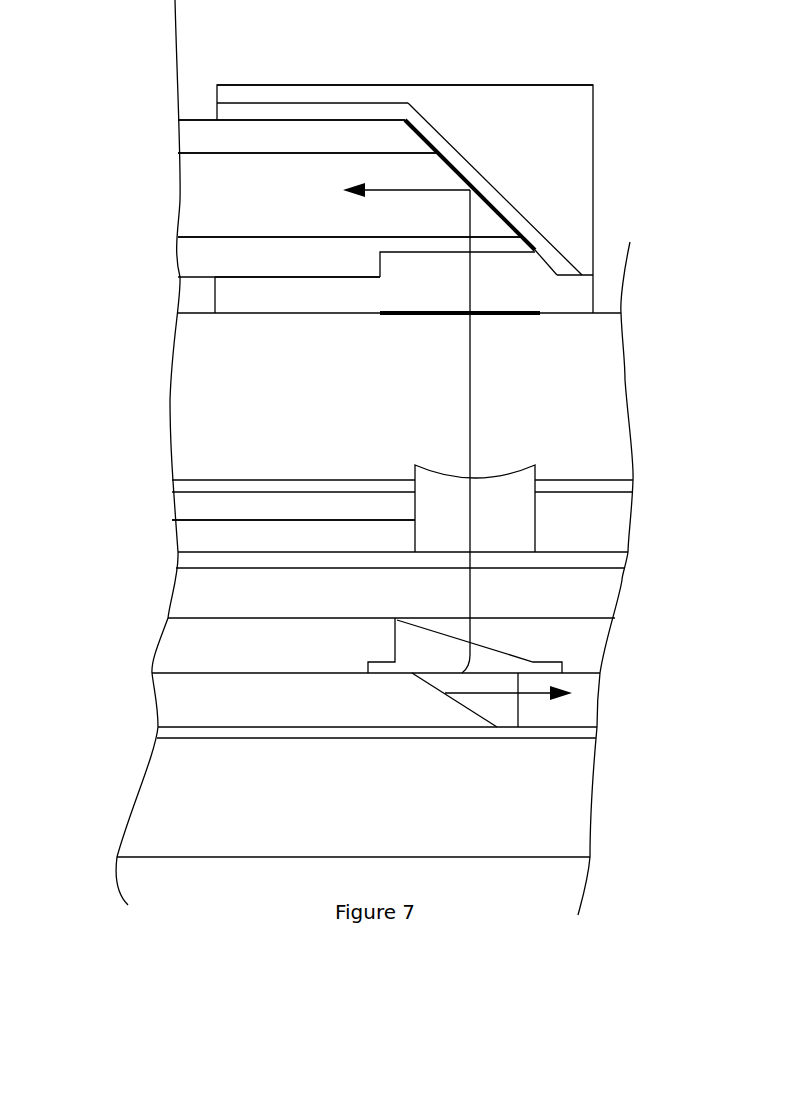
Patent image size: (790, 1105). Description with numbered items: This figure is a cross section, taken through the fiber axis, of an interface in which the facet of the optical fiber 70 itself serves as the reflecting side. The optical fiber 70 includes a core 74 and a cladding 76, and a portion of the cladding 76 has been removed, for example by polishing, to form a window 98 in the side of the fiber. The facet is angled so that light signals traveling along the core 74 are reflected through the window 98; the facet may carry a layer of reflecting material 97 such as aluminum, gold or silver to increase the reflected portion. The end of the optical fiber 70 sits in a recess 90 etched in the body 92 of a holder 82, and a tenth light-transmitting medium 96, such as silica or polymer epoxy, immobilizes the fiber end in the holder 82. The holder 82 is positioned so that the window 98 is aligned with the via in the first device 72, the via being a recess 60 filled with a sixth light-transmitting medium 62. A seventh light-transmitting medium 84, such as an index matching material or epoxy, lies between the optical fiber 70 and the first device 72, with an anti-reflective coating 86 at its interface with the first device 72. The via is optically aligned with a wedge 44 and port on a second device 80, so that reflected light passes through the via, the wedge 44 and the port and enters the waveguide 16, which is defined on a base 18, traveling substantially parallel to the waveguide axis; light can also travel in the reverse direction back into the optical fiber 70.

The optical fiber 70 is at (199, 72).
The holder 82 is at (620, 60).
The body 92 is at (468, 105).
The cladding 76 is at (178, 137).
The core 74 is at (207, 205).
The recess 90 is at (455, 148).
The tenth light-transmitting medium 96 is at (483, 183).
The reflecting material 97 is at (447, 165).
The window 98 is at (533, 258).
The anti-reflective coating 86 is at (387, 307).
The seventh light-transmitting medium 84 is at (276, 295).
The base 18 is at (148, 325).
The first device 72 is at (657, 312).
The sixth light-transmitting medium 62 is at (452, 495).
The recess 60 is at (412, 520).
The wedge 44 is at (368, 672).
The waveguide 16 is at (575, 712).
The second device 80 is at (625, 620).